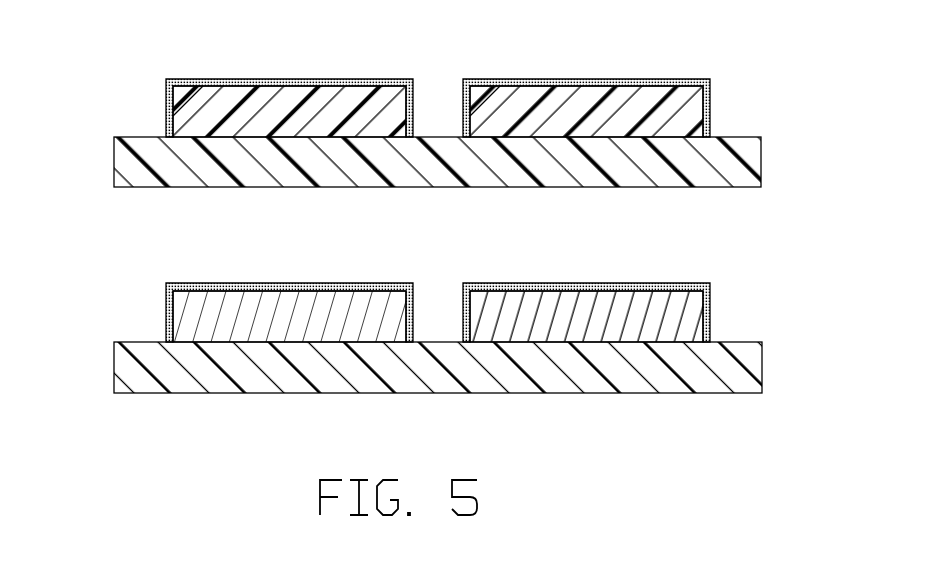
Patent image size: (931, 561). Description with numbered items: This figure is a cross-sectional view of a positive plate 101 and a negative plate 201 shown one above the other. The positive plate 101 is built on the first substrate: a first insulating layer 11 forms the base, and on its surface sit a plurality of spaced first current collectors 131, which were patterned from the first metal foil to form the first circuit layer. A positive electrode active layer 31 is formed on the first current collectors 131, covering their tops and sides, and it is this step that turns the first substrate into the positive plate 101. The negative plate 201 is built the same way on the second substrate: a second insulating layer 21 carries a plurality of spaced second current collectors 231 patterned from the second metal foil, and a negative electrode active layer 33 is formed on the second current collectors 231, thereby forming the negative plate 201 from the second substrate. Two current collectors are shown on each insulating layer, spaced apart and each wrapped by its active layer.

The positive plate 101 is at (434, 112).
The first insulating layer 11 is at (737, 168).
The first current collectors 131 is at (630, 97).
The positive electrode active layer 31 is at (706, 98).
The negative plate 201 is at (436, 316).
The second insulating layer 21 is at (737, 373).
The second current collectors 231 is at (632, 302).
The negative electrode active layer 33 is at (710, 302).